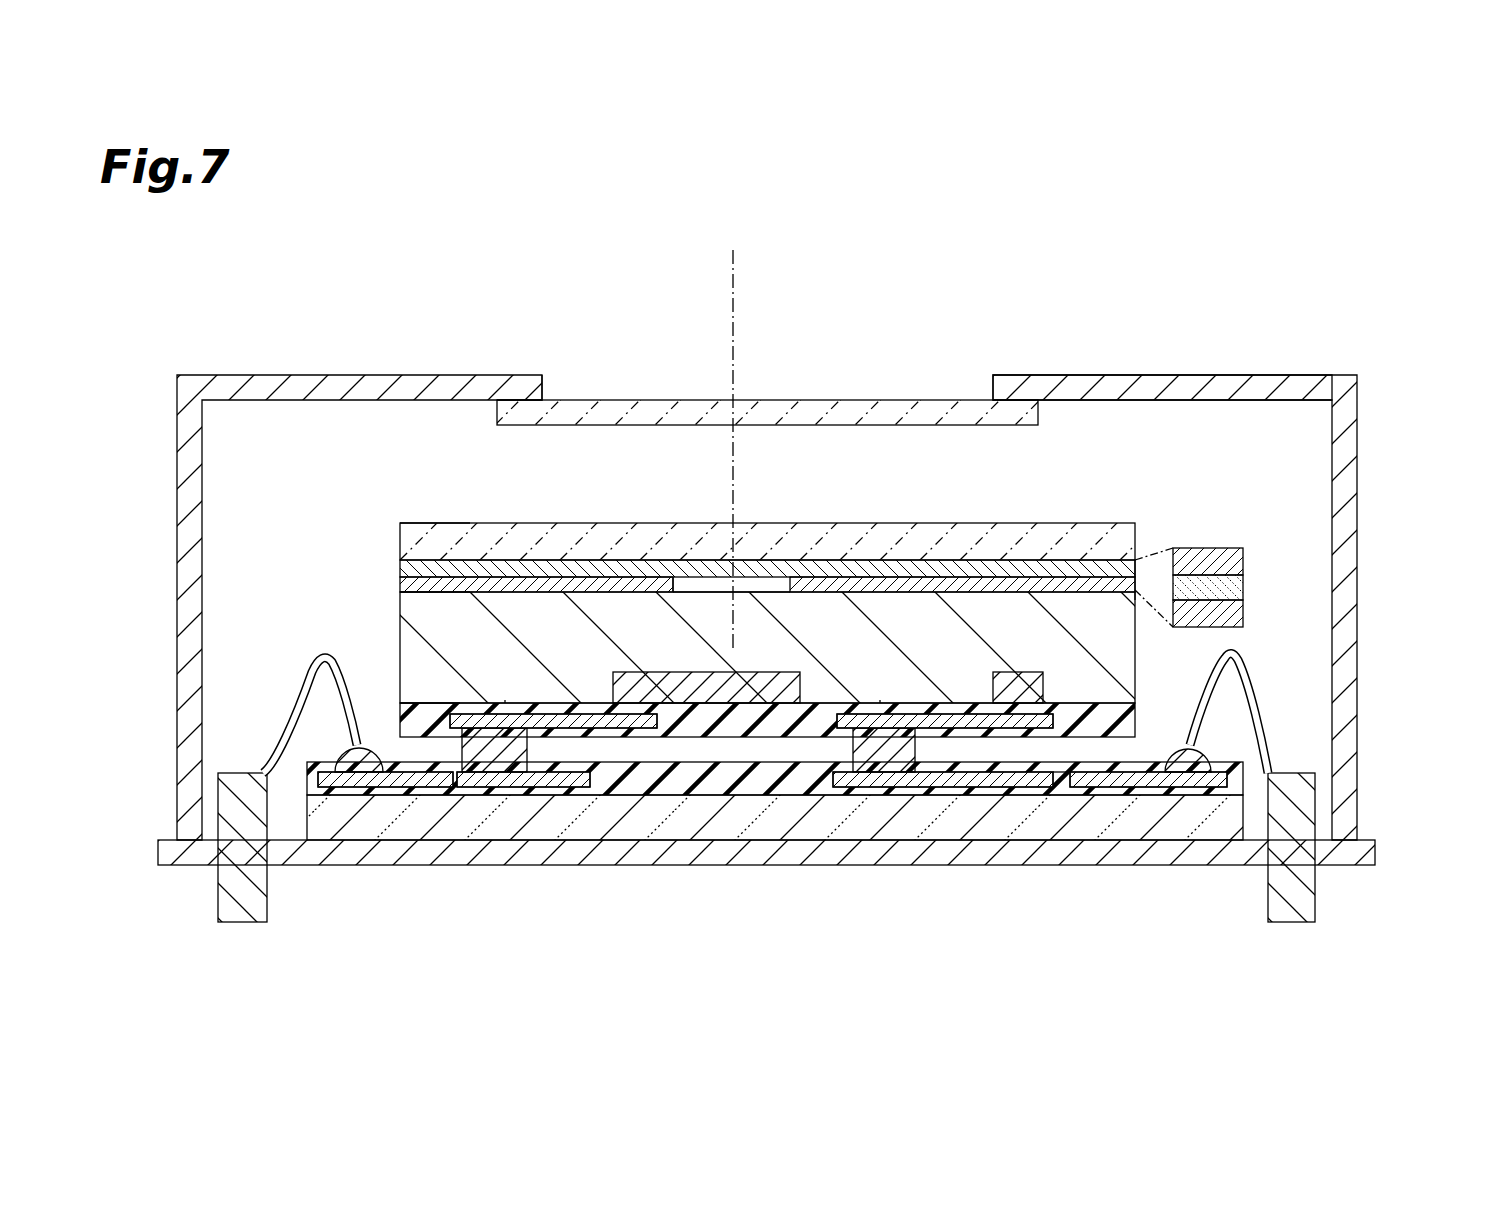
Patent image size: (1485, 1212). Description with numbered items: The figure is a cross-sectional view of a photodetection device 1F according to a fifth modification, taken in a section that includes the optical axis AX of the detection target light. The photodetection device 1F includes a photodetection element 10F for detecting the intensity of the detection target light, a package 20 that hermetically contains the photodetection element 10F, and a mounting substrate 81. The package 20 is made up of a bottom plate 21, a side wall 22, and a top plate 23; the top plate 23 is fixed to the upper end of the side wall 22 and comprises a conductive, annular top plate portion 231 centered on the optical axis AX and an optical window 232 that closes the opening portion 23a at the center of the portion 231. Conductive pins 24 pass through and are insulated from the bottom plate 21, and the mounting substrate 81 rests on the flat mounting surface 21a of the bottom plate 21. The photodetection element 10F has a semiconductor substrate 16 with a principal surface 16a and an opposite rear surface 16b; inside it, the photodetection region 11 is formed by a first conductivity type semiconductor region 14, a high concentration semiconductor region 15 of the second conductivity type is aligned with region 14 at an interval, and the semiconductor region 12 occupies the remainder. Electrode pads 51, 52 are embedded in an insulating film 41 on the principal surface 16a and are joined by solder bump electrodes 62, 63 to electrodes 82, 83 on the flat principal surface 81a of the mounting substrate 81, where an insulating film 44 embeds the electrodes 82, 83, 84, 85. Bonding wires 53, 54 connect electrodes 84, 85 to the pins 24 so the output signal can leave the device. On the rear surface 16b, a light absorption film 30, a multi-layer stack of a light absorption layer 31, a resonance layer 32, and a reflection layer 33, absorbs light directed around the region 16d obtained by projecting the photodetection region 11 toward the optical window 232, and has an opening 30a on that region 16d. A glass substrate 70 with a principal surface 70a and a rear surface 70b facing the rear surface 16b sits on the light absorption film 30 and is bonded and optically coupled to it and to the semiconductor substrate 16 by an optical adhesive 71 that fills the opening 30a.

The photodetection device 1F is at (1286, 308).
The optical axis AX is at (730, 274).
The photodetection element 10F is at (481, 498).
The photodetection region 11 is at (724, 738).
The semiconductor region 12 is at (565, 640).
The semiconductor region 14 is at (630, 724).
The high concentration semiconductor region 15 is at (1020, 690).
The semiconductor substrate 16 is at (1146, 669).
The principal surface 16a is at (438, 704).
The rear surface 16b is at (1120, 576).
The region 16d is at (620, 602).
The package 20 is at (343, 370).
The bottom plate 21 is at (718, 852).
The mounting surface 21a is at (878, 828).
The side wall 22 is at (1345, 437).
The top plate 23 is at (840, 312).
The opening portion 23a is at (547, 396).
The top plate portion 231 is at (1140, 386).
The optical window 232 is at (862, 410).
The pin 24 is at (243, 922).
The light absorption film 30 is at (620, 583).
The opening 30a is at (795, 580).
The light absorption layer 31 is at (1245, 552).
The resonance layer 32 is at (1245, 585).
The reflection layer 33 is at (1245, 613).
The insulating film 41 is at (680, 690).
The insulating film 44 is at (818, 786).
The electrode pad 51 is at (540, 730).
The electrode pad 52 is at (990, 724).
The bonding wire 53 is at (300, 690).
The bonding wire 54 is at (1262, 727).
The bump electrode 62 is at (503, 705).
The bump electrode 63 is at (880, 745).
The glass substrate 70 is at (400, 530).
The principal surface 70a is at (430, 522).
The rear surface 70b is at (400, 592).
The optical adhesive 71 is at (400, 567).
The mounting substrate 81 is at (1095, 812).
The principal surface 81a is at (497, 758).
The electrode 82 is at (521, 790).
The electrode 83 is at (940, 778).
The electrode 84 is at (360, 776).
The electrode 85 is at (1147, 778).